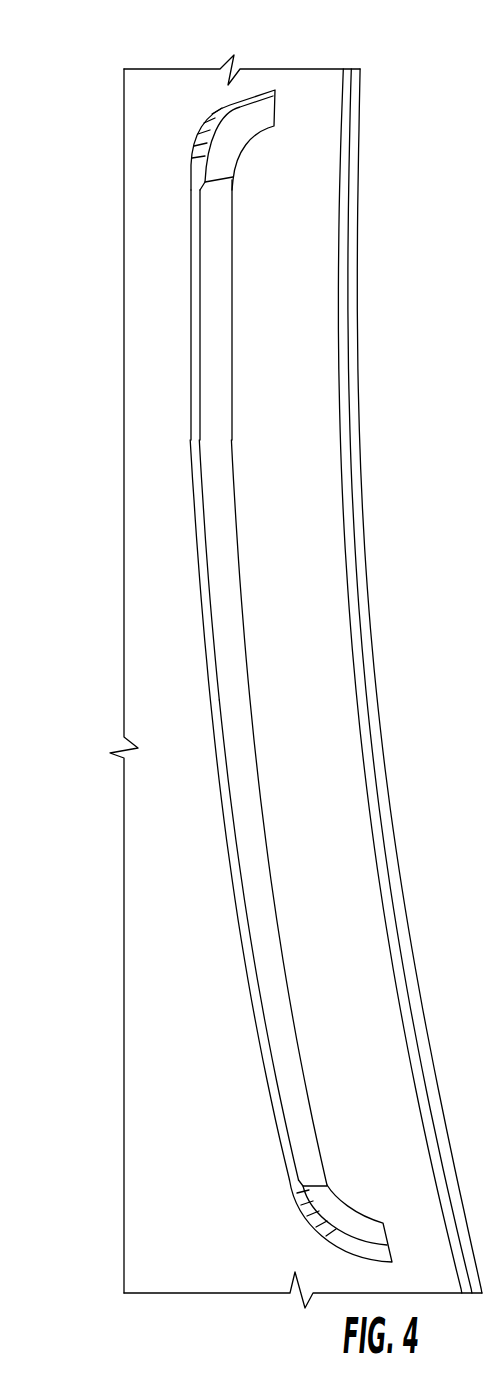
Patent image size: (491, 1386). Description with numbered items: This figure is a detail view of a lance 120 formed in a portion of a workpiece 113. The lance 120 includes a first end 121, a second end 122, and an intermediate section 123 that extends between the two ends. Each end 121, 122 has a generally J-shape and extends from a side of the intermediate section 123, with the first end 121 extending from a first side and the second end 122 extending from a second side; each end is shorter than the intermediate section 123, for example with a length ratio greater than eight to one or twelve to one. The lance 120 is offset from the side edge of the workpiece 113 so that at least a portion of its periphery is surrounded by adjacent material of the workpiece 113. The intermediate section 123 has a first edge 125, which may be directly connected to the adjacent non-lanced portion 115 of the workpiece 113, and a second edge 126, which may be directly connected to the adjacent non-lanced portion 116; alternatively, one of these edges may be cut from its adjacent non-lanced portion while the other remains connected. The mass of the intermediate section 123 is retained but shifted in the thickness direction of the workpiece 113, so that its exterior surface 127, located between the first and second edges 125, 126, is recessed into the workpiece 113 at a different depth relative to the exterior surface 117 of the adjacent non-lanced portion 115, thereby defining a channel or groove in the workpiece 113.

The workpiece 113 is at (155, 1145).
The adjacent non-lanced portion 115 is at (178, 684).
The adjacent non-lanced portion 116 is at (298, 250).
The exterior surface of the adjacent non-lanced portion 117 is at (178, 250).
The lance 120 is at (186, 682).
The first end 121 is at (226, 136).
The second end 122 is at (334, 1217).
The intermediate section 123 is at (243, 845).
The first edge 125 is at (188, 297).
The second edge 126 is at (279, 936).
The exterior surface 127 is at (213, 537).